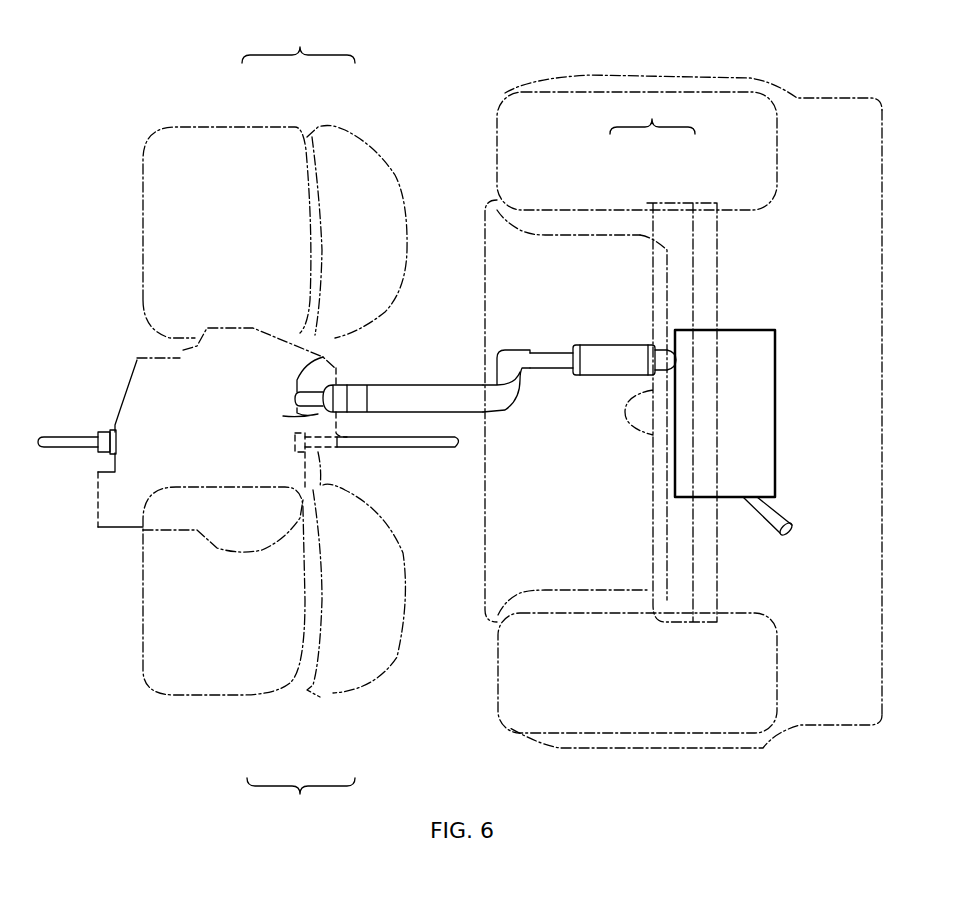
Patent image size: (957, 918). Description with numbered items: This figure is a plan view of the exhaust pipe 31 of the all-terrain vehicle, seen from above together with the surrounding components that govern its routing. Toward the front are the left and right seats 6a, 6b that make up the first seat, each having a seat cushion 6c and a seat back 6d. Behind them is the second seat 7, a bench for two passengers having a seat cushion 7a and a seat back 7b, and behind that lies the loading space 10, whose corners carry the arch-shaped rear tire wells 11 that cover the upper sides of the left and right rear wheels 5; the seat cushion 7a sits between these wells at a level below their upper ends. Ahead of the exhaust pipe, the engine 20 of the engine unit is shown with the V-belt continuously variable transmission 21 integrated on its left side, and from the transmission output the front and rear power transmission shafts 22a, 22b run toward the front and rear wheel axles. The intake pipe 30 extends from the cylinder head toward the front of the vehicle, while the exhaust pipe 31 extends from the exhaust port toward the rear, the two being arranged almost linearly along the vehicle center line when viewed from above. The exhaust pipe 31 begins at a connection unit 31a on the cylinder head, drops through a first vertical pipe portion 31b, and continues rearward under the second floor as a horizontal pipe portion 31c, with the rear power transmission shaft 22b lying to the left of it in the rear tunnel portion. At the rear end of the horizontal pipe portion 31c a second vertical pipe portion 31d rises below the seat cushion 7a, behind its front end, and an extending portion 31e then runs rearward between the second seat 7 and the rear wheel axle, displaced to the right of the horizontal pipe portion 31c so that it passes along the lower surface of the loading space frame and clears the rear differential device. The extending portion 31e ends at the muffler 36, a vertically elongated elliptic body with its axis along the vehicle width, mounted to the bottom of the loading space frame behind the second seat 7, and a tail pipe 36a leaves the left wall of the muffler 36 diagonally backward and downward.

The rear wheel 5 is at (777, 180).
The left seat 6a is at (301, 801).
The right seat 6b is at (298, 41).
The seat cushion 6c is at (263, 127).
The seat back 6d is at (345, 125).
The second seat 7 is at (607, 357).
The seat cushion 7a is at (620, 210).
The seat back 7b is at (680, 203).
The loading space 10 is at (880, 437).
The rear tire well 11 is at (725, 72).
The engine 20 is at (326, 353).
The V-belt continuously variable transmission 21 is at (128, 534).
The front power transmission shaft 22a is at (70, 455).
The rear power transmission shaft 22b is at (413, 447).
The intake pipe 30 is at (133, 354).
The exhaust pipe 31 is at (447, 369).
The connection unit 31a is at (336, 368).
The first vertical pipe portion 31b is at (298, 402).
The horizontal pipe portion 31c is at (418, 385).
The second vertical pipe portion 31d is at (520, 393).
The extending portion 31e is at (620, 345).
The muffler 36 is at (778, 382).
The tail pipe 36a is at (790, 520).